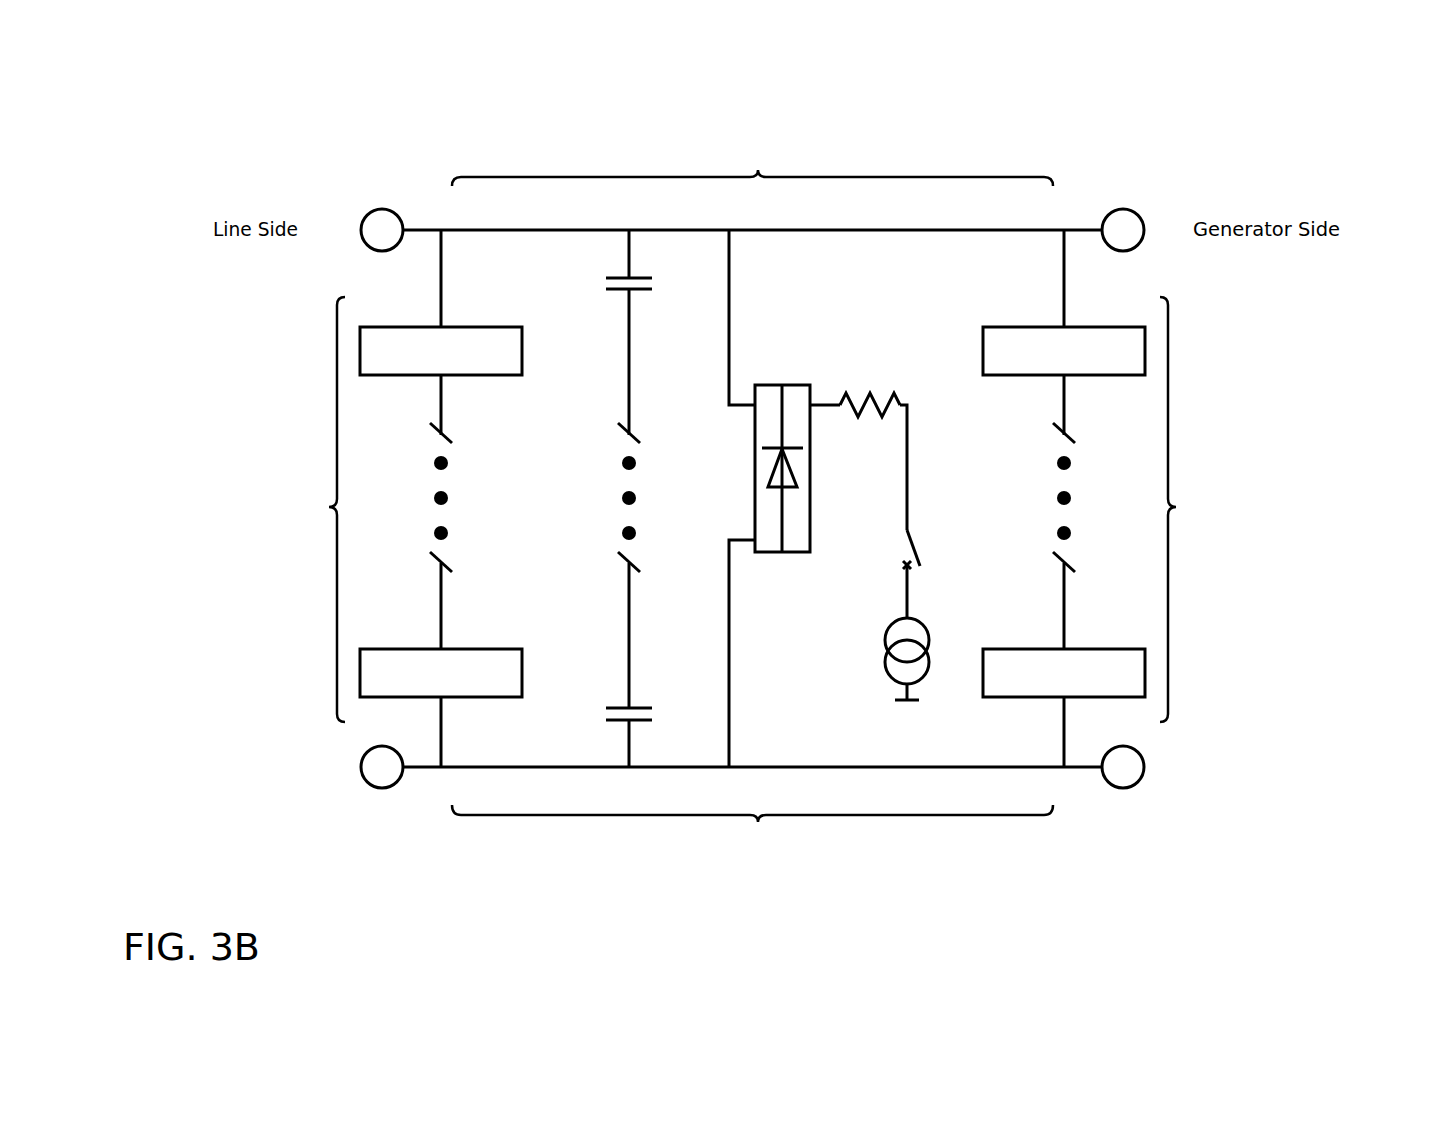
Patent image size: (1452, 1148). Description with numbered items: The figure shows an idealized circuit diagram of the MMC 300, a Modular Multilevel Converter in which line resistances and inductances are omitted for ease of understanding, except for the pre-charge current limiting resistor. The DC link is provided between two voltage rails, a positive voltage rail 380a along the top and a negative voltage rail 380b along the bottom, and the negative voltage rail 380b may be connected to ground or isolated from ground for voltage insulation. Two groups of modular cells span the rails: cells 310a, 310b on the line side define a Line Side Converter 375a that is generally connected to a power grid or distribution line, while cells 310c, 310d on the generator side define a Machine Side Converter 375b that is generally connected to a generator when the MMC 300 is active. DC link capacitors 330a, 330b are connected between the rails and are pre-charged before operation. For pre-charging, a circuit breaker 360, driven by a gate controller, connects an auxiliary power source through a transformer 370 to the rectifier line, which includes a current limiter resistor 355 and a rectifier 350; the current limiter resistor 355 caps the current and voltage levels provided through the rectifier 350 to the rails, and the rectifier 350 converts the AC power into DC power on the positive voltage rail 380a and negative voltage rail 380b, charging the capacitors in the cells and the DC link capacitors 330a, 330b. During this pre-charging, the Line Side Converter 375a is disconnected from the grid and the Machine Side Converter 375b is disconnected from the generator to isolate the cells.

The MMC 300 is at (1372, 124).
The cell 310a is at (441, 351).
The cell 310b is at (441, 673).
The cell 310c is at (1064, 351).
The cell 310d is at (1064, 673).
The DC link capacitor 330a is at (607, 290).
The DC link capacitor 330b is at (606, 721).
The rectifier 350 is at (753, 490).
The current limiter resistor 355 is at (840, 393).
The circuit breaker 360 is at (908, 523).
The transformer 370 is at (884, 675).
The Line Side Converter 375a is at (302, 509).
The Machine Side Converter 375b is at (1204, 509).
The positive voltage rail 380a is at (752, 161).
The negative voltage rail 380b is at (752, 836).